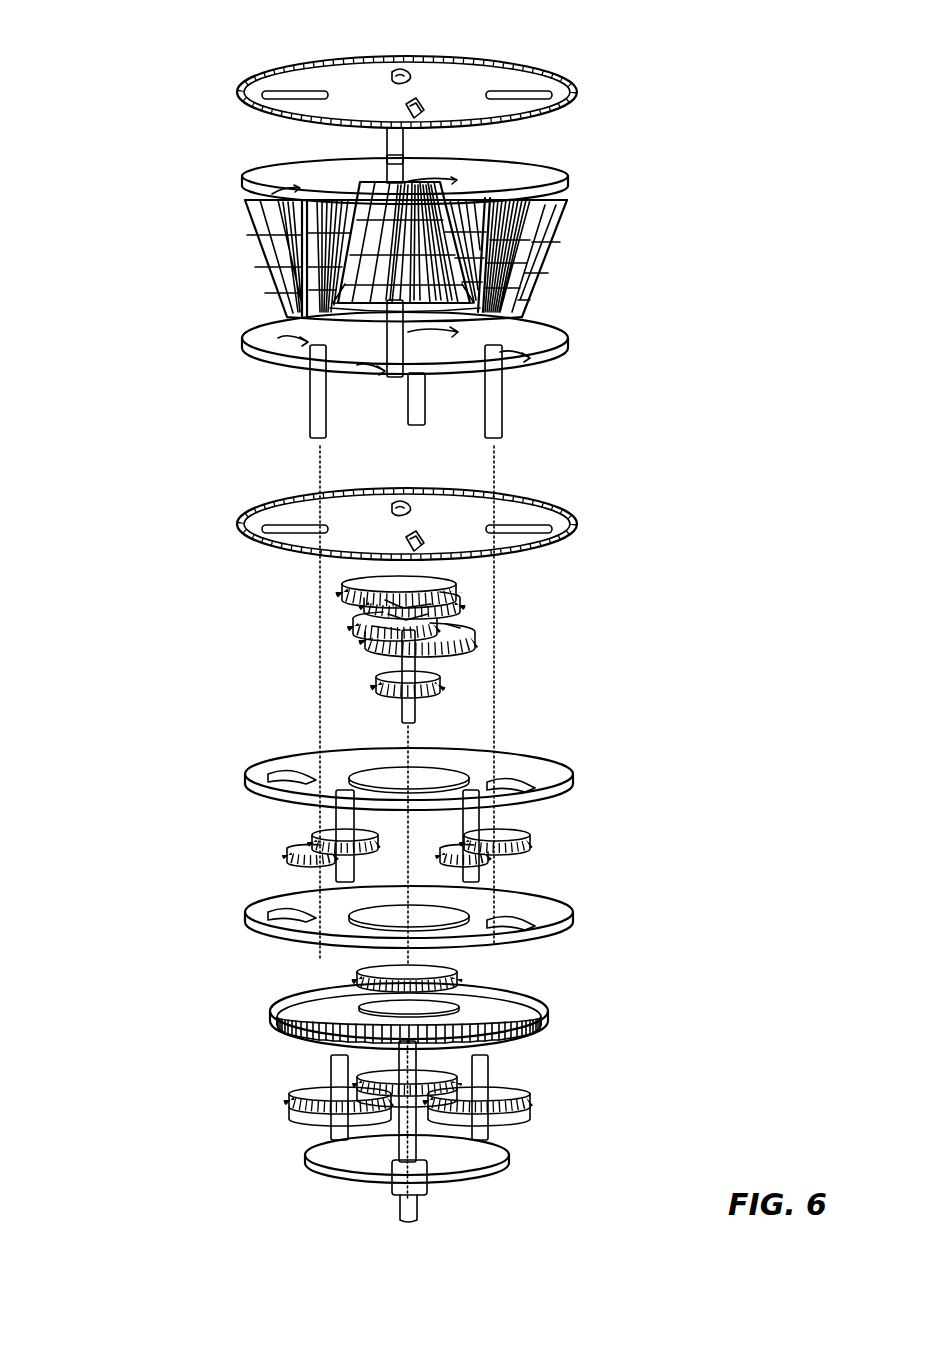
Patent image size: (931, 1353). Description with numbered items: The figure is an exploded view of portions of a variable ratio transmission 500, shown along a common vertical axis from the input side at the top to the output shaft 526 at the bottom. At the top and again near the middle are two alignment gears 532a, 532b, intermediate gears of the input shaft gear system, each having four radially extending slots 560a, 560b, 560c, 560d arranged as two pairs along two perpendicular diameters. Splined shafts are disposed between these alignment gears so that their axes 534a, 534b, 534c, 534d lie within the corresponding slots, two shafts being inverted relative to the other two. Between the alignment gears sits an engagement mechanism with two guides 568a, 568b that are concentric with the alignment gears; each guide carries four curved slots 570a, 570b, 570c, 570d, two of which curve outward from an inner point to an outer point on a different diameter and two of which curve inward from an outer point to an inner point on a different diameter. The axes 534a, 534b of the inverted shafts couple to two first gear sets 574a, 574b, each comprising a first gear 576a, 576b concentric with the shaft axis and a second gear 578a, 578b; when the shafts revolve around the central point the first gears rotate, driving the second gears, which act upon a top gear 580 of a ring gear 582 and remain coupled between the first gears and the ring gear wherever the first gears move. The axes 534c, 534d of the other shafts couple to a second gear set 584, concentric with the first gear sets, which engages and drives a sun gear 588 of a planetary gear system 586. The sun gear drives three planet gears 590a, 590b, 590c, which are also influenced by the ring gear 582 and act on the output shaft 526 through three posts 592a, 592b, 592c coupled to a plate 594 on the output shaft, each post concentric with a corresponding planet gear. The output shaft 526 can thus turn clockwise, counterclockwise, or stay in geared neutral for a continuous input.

The variable ratio transmission 500 is at (90, 78).
The output shaft 526 is at (420, 1215).
The alignment gear 532a is at (577, 88).
The alignment gear 532b is at (578, 516).
The axis of inverted splined shaft 534a is at (318, 443).
The axis of inverted splined shaft 534b is at (496, 443).
The axis of splined shaft 534c is at (416, 430).
The axis of splined shaft 534d is at (398, 380).
The slot 560a is at (280, 92).
The slot 560b is at (520, 92).
The slot 560c is at (425, 122).
The slot 560d is at (400, 74).
The guide 568a is at (547, 176).
The guide 568b is at (245, 338).
The curved slot 570a is at (288, 345).
The curved slot 570b is at (525, 372).
The curved slot 570c is at (372, 372).
The curved slot 570d is at (450, 340).
The first gear set 574a is at (243, 843).
The first gear set 574b is at (591, 843).
The first gear 576a is at (290, 855).
The first gear 576b is at (527, 846).
The second gear 578a is at (380, 840).
The second gear 578b is at (445, 857).
The top gear 580 is at (450, 968).
The ring gear 582 is at (548, 1003).
The second gear set 584 is at (510, 627).
The planetary gear system 586 is at (238, 1088).
The sun gear 588 is at (440, 688).
The planet gear 590a is at (530, 1097).
The planet gear 590b is at (440, 1073).
The planet gear 590c is at (288, 1110).
The post 592a is at (490, 1130).
The post 592b is at (420, 1122).
The post 592c is at (325, 1137).
The plate 594 is at (355, 1168).